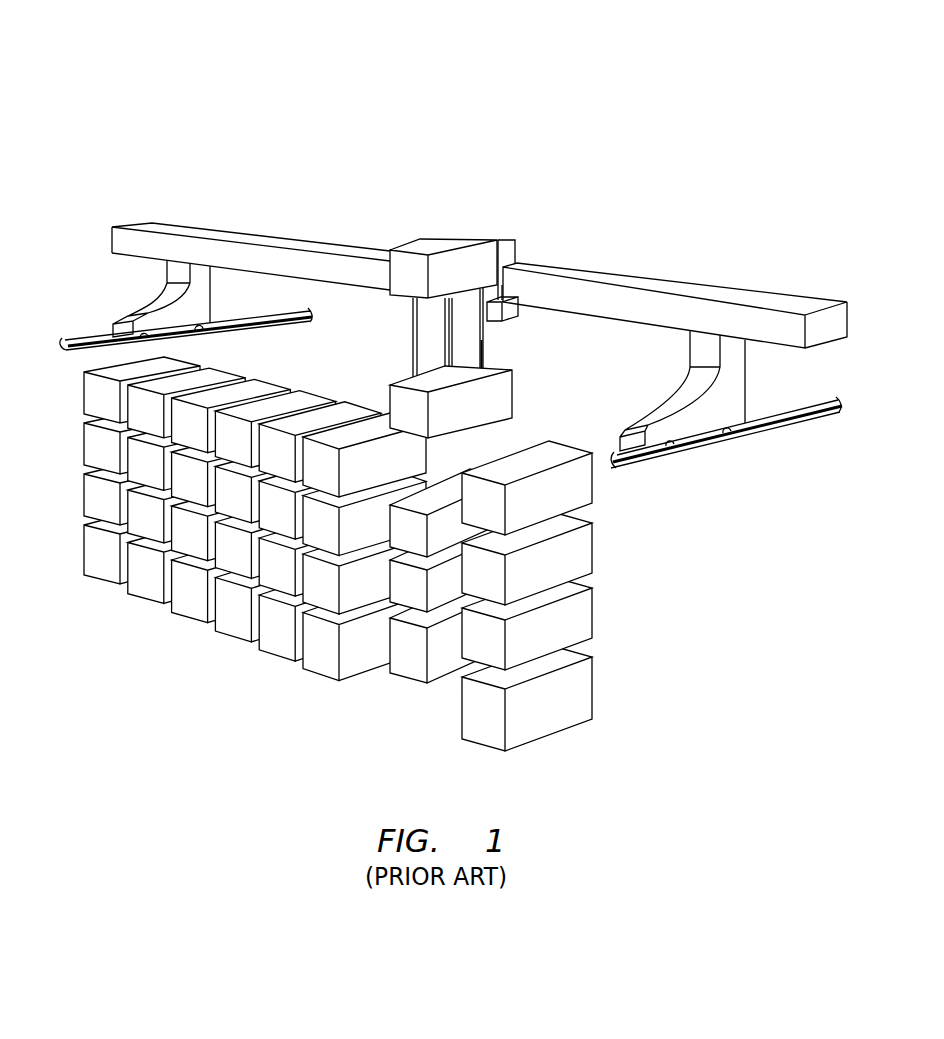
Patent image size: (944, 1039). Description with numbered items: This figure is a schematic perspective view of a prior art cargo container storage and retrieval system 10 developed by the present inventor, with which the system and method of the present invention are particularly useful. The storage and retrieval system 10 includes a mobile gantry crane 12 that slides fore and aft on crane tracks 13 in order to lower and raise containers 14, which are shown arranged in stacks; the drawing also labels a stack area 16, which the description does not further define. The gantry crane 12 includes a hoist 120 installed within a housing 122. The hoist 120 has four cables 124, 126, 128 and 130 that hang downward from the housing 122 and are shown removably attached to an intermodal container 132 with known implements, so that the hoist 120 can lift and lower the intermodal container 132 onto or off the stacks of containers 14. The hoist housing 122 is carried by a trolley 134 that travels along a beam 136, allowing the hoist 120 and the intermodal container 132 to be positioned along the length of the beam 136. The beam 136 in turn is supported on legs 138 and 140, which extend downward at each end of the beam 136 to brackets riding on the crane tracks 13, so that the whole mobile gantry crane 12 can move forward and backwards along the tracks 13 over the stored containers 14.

The storage and retrieval system 10 is at (190, 76).
The mobile gantry crane 12 is at (428, 243).
The crane tracks 13 is at (100, 340).
The containers 14 is at (554, 456).
The stack of blocks 16 is at (557, 406).
The hoist 120 is at (386, 298).
The housing 122 is at (460, 240).
The cable 124 is at (412, 312).
The cable 126 is at (445, 352).
The cable 128 is at (484, 330).
The cable 130 is at (484, 360).
The intermodal container 132 is at (483, 415).
The trolley 134 is at (517, 235).
The beam 136 is at (678, 280).
The leg 138 is at (745, 377).
The leg 140 is at (183, 270).